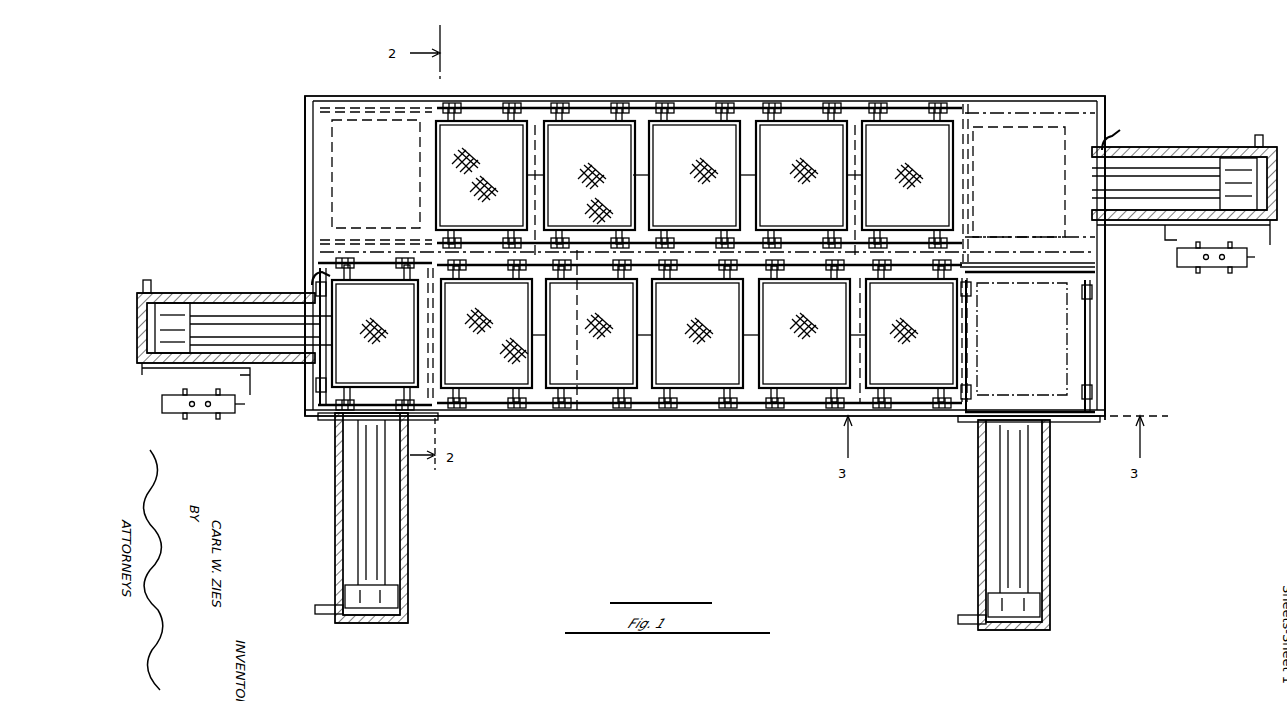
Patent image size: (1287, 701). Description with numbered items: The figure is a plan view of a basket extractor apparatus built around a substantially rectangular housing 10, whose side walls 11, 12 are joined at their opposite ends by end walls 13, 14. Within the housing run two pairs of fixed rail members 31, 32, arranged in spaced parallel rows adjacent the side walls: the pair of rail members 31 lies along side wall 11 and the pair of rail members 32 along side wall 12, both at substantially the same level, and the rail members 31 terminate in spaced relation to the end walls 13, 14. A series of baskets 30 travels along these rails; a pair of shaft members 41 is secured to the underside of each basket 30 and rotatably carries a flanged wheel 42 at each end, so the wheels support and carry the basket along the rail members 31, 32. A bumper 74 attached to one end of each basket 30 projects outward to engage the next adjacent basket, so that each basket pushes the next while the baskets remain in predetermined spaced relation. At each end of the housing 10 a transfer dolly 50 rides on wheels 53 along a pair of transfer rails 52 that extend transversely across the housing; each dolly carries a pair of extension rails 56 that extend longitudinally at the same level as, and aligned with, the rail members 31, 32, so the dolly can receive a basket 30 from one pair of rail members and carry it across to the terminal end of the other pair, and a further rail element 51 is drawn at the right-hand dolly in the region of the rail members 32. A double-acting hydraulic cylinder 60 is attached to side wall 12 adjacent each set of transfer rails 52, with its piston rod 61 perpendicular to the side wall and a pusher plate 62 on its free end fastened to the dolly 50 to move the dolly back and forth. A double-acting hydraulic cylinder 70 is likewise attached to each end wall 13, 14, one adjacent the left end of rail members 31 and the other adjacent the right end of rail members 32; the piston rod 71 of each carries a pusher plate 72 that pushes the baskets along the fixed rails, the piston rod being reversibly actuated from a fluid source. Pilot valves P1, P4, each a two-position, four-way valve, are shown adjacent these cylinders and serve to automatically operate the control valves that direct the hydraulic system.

The housing 10 is at (794, 94).
The side wall 11 is at (683, 240).
The side wall 12 is at (766, 354).
The end wall 13 is at (289, 256).
The end wall 14 is at (1108, 312).
The basket 30 is at (648, 256).
The rail members 31 is at (699, 337).
The rail members 32 is at (910, 108).
The shaft members 41 is at (462, 112).
The flanged wheel 42 is at (557, 106).
The transfer dolly 50 is at (1035, 272).
The rail 51 is at (1027, 265).
The transfer rails 52 is at (330, 184).
The wheels 53 is at (1095, 292).
The extension rails 56 is at (1005, 272).
The double-acting hydraulic cylinder 60 is at (408, 556).
The piston rod 61 is at (386, 524).
The pusher plate 62 is at (320, 418).
The double-acting hydraulic cylinder 70 is at (224, 293).
The piston rod 71 is at (706, 255).
The pusher plate 72 is at (330, 309).
The bumper 74 is at (972, 165).
The pilot valve P1 is at (208, 414).
The pilot valve P4 is at (1215, 268).